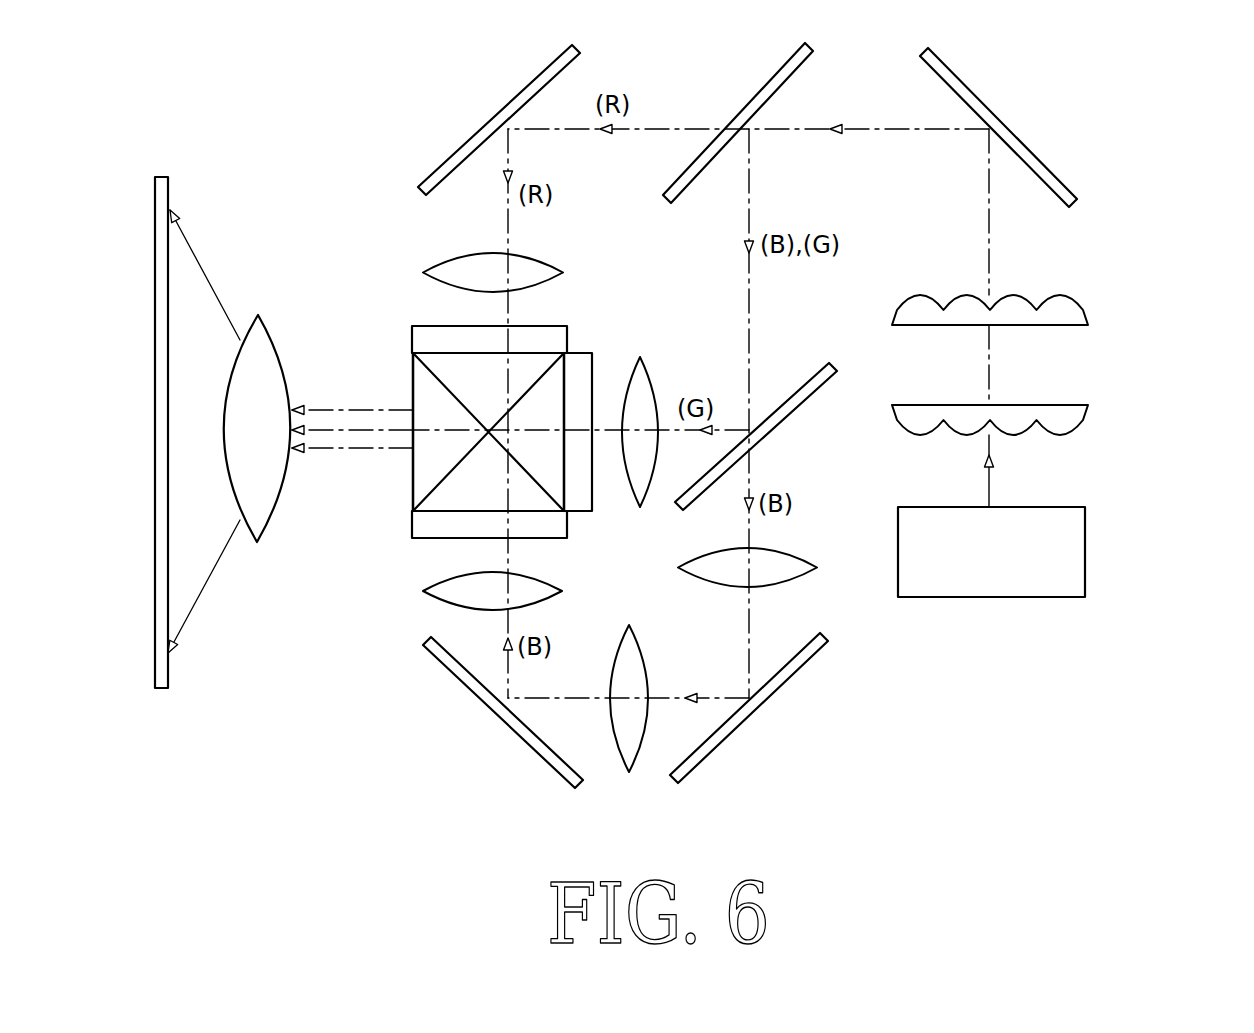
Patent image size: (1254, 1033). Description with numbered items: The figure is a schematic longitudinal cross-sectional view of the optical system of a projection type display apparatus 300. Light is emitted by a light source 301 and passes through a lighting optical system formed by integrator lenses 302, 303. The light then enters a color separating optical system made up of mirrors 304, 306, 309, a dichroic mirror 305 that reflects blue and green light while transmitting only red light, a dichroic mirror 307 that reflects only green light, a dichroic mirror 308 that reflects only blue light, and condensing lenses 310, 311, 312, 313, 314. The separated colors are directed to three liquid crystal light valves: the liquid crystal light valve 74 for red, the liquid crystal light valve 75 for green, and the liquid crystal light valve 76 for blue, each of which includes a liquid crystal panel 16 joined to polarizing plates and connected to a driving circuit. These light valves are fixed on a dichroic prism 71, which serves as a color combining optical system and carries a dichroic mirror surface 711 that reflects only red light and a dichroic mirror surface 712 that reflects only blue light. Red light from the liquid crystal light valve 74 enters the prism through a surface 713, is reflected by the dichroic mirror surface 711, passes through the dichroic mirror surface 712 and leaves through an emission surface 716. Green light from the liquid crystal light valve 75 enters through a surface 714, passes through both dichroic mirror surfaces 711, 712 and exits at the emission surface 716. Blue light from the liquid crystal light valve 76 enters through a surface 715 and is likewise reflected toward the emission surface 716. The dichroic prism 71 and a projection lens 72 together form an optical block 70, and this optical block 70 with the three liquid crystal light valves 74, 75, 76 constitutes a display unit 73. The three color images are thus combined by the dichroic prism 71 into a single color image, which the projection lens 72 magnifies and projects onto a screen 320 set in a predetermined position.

The projection type display apparatus 300 is at (1080, 130).
The light source 301 is at (1085, 555).
The integrator lens 302 is at (1085, 418).
The integrator lens 303 is at (1085, 318).
The mirror 304 is at (965, 92).
The dichroic mirror 305 is at (770, 90).
The mirror 306 is at (527, 90).
The dichroic mirror 307 is at (797, 390).
The dichroic mirror 308 is at (805, 655).
The mirror 309 is at (480, 680).
The condensing lens 310 is at (455, 265).
The condensing lens 311 is at (645, 370).
The condensing lens 312 is at (785, 565).
The condensing lens 313 is at (632, 740).
The condensing lens 314 is at (435, 595).
The screen 320 is at (163, 688).
The optical block 70 is at (300, 557).
The dichroic prism 71 is at (425, 480).
The projection lens 72 is at (258, 342).
The display unit 73 is at (572, 290).
The liquid crystal light valve 74 is at (422, 340).
The liquid crystal light valve 75 is at (575, 365).
The liquid crystal light valve 76 is at (557, 520).
The dichroic mirror surface 711 is at (425, 460).
The dichroic mirror surface 712 is at (432, 378).
The surface 713 is at (440, 355).
The surface 714 is at (565, 455).
The surface 715 is at (430, 515).
The emission surface 716 is at (410, 400).
The liquid crystal panel 16 is at (458, 330).